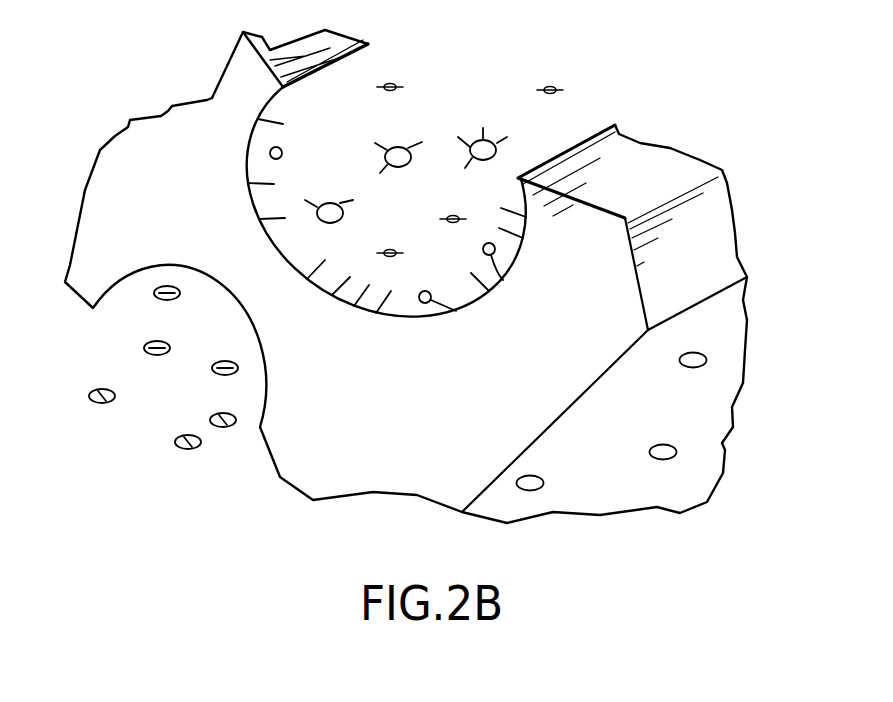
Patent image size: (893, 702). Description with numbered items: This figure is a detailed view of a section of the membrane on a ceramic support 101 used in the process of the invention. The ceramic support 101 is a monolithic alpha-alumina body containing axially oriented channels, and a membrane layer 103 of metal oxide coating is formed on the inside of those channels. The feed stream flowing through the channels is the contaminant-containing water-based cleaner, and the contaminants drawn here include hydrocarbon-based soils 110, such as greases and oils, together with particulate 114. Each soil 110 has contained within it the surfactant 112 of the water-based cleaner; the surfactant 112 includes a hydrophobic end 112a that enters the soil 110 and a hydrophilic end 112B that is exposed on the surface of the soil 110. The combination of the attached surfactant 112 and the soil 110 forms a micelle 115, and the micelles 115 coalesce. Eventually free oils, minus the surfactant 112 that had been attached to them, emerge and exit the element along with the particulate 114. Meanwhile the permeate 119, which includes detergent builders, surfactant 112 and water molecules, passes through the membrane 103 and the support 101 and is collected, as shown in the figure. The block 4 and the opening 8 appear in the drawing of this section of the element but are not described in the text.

The ceramic support 101 is at (505, 418).
The aperture 8 is at (438, 108).
The guide block 4 is at (670, 163).
The particulate 114 is at (553, 84).
The surfactant 112 is at (316, 212).
The hydrophobic end 112a is at (398, 146).
The hydrophilic end 112B is at (407, 167).
The membrane layer 103 is at (524, 236).
The micelle 115 is at (271, 157).
The hydrocarbon-based soils 110 is at (146, 351).
The permeate 119 is at (710, 366).